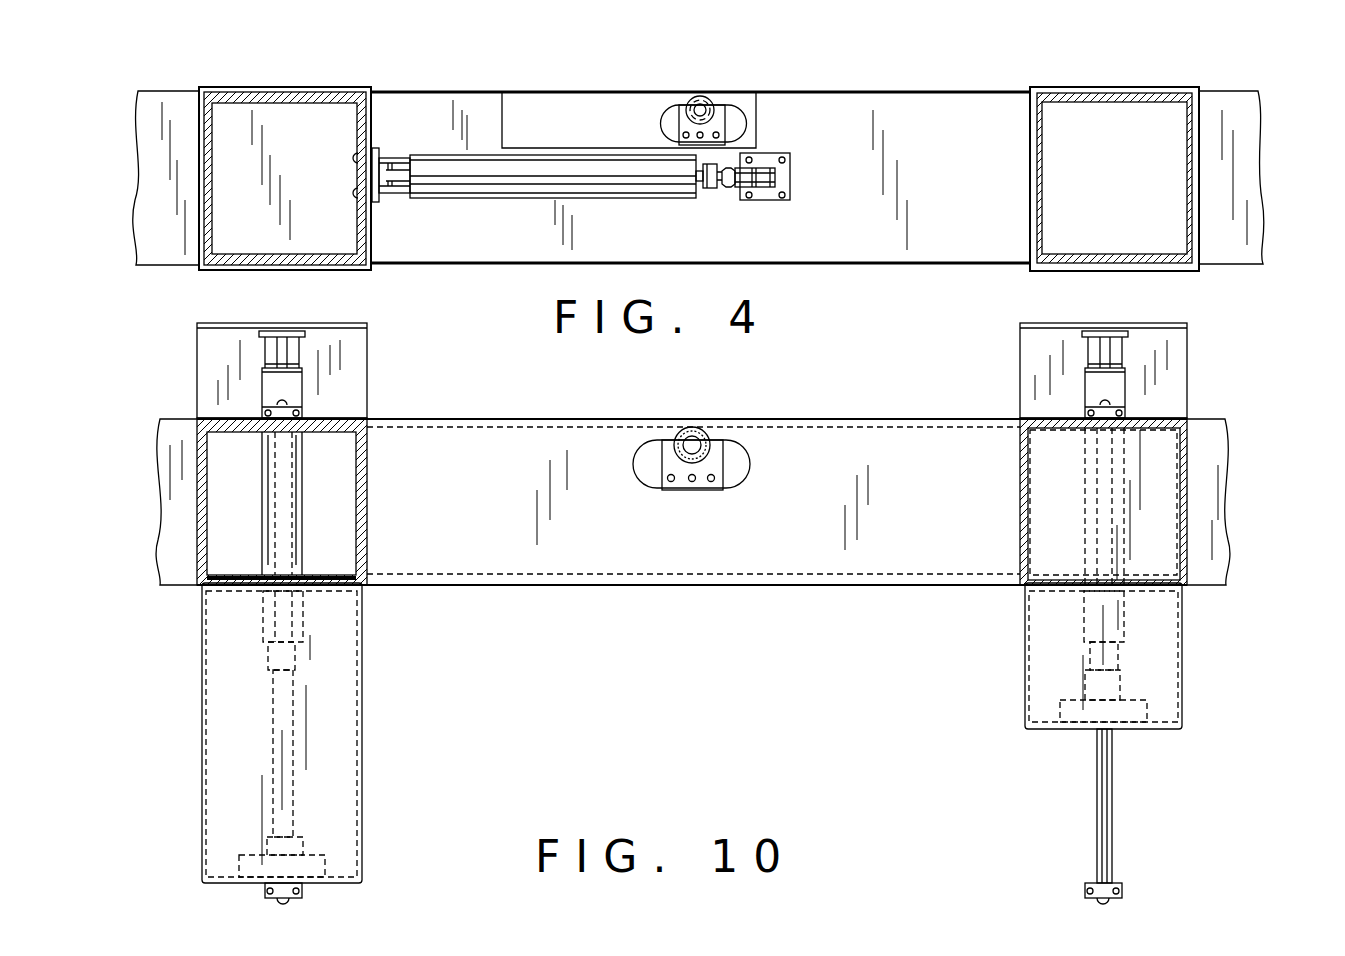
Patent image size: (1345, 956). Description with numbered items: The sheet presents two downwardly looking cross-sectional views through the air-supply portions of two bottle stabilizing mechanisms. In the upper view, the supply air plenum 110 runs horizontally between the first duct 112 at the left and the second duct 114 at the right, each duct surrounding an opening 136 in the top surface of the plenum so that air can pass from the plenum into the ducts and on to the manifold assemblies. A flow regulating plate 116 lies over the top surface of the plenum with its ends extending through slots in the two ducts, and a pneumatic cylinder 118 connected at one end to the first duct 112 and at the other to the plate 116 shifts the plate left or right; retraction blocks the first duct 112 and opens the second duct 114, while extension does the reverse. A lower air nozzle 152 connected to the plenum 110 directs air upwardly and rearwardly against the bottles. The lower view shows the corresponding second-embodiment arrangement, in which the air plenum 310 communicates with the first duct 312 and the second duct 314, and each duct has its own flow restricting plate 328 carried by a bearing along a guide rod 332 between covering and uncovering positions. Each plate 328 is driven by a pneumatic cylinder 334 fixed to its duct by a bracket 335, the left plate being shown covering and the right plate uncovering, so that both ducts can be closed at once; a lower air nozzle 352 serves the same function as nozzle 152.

In FIG. 4, the supply air plenum 110 is at (630, 92).
In FIG. 4, the first duct 112 is at (277, 87).
In FIG. 4, the second duct 114 is at (1107, 87).
In FIG. 4, the flow regulating plate 116 is at (987, 197).
In FIG. 4, the pneumatic cylinder 118 is at (540, 200).
In FIG. 4, the opening 136 is at (292, 147).
In FIG. 4, the lower air nozzle 152 is at (710, 100).
In FIG. 10, the air plenum 310 is at (857, 419).
In FIG. 10, the first duct 312 is at (1187, 462).
In FIG. 10, the second duct 314 is at (367, 467).
In FIG. 10, the flow restricting plate 328 is at (362, 688).
In FIG. 10, the guide rod 332 is at (268, 748).
In FIG. 10, the pneumatic cylinder 334 is at (305, 386).
In FIG. 10, the bracket 335 is at (368, 343).
In FIG. 10, the lower air nozzle 352 is at (692, 428).